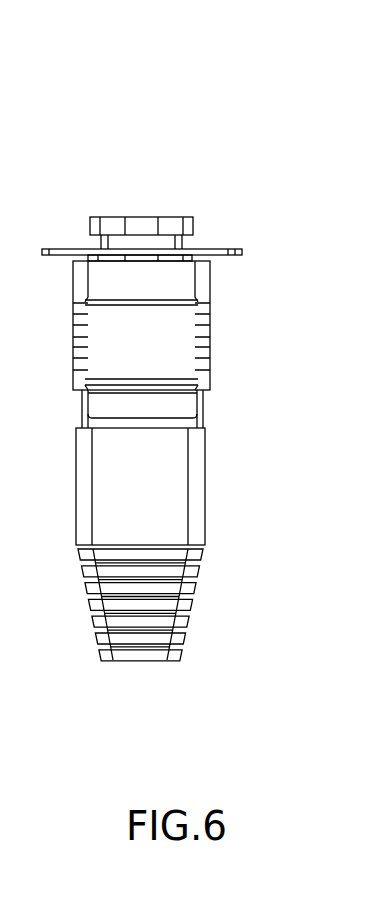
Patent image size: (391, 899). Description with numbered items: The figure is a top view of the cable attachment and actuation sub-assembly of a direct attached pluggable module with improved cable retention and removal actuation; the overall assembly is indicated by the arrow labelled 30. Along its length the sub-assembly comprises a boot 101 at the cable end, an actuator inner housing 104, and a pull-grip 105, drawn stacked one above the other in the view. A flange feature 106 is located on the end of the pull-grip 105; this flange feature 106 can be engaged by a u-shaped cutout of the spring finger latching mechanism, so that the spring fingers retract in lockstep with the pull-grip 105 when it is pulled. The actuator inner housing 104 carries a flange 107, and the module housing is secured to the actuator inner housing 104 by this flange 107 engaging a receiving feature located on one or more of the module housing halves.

The sensor insert assembly 30 is at (122, 136).
The boot 101 is at (205, 499).
The actuator inner housing 104 is at (203, 409).
The pull-grip 105 is at (210, 329).
The flange feature 106 is at (242, 250).
The flange 107 is at (188, 217).